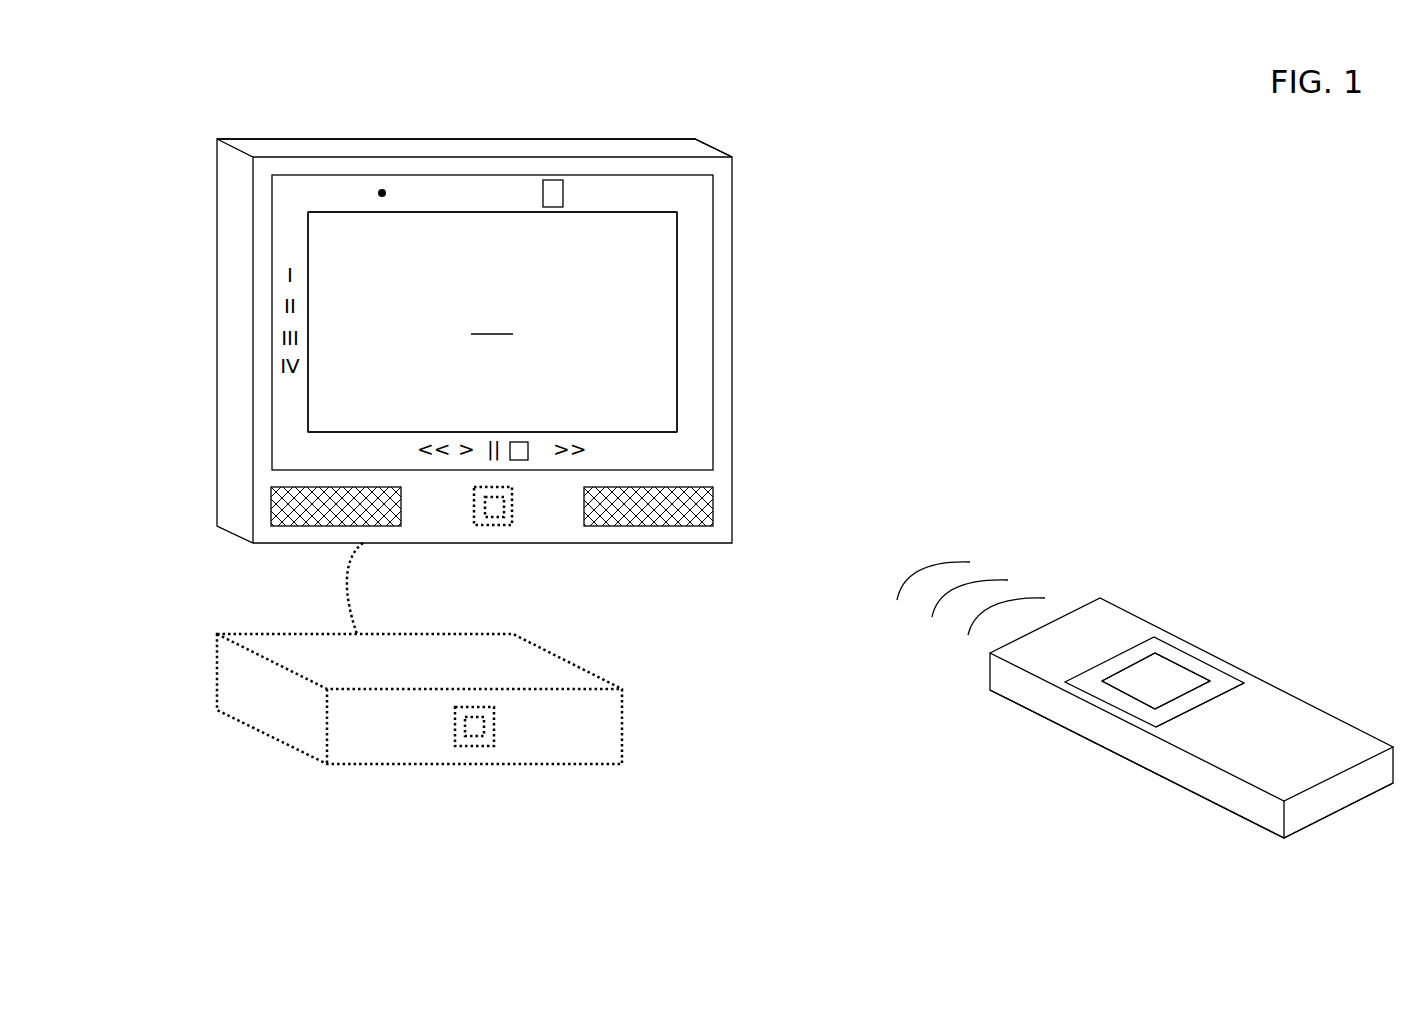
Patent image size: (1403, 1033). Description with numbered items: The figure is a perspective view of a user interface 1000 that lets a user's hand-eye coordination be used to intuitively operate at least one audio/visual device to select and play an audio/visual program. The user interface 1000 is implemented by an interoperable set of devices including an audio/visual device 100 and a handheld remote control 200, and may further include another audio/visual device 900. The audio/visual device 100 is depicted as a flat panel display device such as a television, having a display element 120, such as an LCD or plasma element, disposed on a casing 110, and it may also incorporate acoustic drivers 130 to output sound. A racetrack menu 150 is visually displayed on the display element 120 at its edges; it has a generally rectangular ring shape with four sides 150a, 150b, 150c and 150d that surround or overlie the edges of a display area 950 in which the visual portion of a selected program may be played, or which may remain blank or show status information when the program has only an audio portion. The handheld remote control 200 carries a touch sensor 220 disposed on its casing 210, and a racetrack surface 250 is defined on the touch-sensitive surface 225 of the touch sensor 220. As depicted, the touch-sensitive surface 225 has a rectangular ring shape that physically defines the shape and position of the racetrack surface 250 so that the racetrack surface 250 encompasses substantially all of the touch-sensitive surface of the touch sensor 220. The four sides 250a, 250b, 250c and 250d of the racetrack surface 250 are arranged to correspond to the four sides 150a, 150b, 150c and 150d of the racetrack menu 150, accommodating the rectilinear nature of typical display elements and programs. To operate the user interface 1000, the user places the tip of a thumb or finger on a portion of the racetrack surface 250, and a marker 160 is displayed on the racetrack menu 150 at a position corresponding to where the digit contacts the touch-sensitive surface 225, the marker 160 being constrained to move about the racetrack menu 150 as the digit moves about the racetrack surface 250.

The audio/visual device 100 is at (752, 135).
The casing 110 is at (437, 148).
The display element 120 is at (657, 358).
The acoustic drivers 130 is at (600, 505).
The racetrack menu 150 is at (290, 413).
The side of racetrack menu 150a is at (640, 193).
The side of racetrack menu 150b is at (620, 450).
The side of racetrack menu 150c is at (290, 228).
The side of racetrack menu 150d is at (694, 268).
The marker 160 is at (560, 207).
The handheld remote control 200 is at (1135, 787).
The casing 210 is at (1247, 800).
The touch sensor 220 is at (512, 520).
The touch-sensitive surface 225 is at (1227, 685).
The racetrack surface 250 is at (510, 494).
The side of racetrack surface 250a is at (1117, 665).
The side of racetrack surface 250b is at (1190, 697).
The side of racetrack surface 250c is at (1118, 700).
The side of racetrack surface 250d is at (1192, 665).
The audio/visual device 900 is at (250, 750).
The display area 950 is at (492, 322).
The user interface 1000 is at (1247, 210).